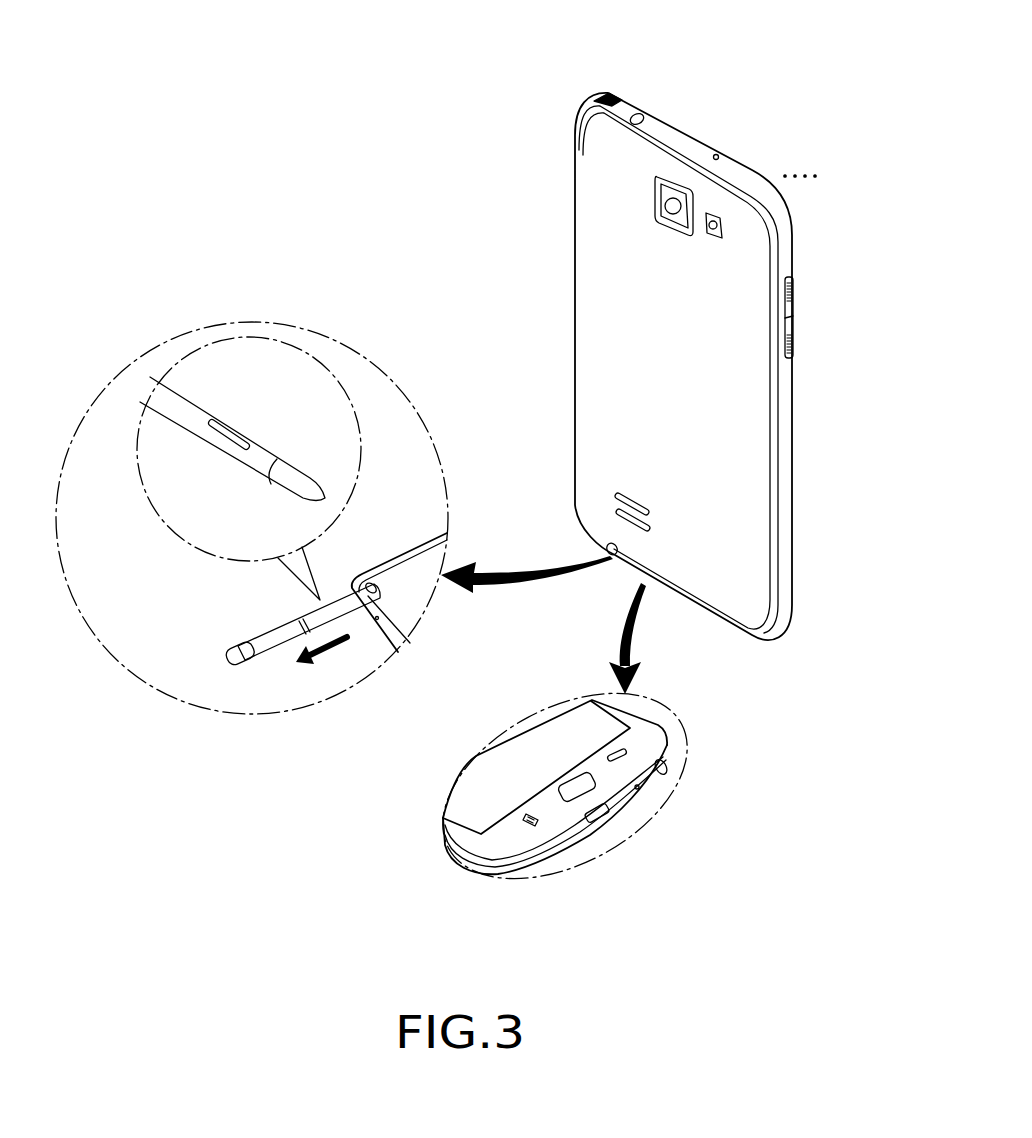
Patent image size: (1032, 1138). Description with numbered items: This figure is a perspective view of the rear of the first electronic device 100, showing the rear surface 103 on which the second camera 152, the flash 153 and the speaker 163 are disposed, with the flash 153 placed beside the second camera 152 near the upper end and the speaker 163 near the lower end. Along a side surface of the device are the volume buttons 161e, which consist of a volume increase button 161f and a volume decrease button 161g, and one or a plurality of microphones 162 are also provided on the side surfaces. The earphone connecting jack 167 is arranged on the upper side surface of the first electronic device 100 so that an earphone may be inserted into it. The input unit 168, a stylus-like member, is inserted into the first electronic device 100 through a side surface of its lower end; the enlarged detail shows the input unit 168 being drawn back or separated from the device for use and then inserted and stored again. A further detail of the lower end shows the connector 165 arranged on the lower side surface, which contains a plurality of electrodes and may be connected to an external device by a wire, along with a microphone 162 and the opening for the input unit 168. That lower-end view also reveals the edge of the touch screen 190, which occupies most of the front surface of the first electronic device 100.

The first electronic device 100 is at (578, 73).
The rear surface 103 is at (597, 348).
The second camera 152 is at (655, 195).
The flash 153 is at (724, 229).
The volume buttons 161e is at (795, 281).
The volume increase button 161f is at (794, 303).
The volume decrease button 161g is at (794, 332).
The microphone 162 is at (720, 157).
The speaker 163 is at (618, 496).
The connector 165 is at (600, 818).
The earphone connecting jack 167 is at (642, 118).
The input unit 168 is at (610, 548).
The touch screen 190 is at (503, 765).